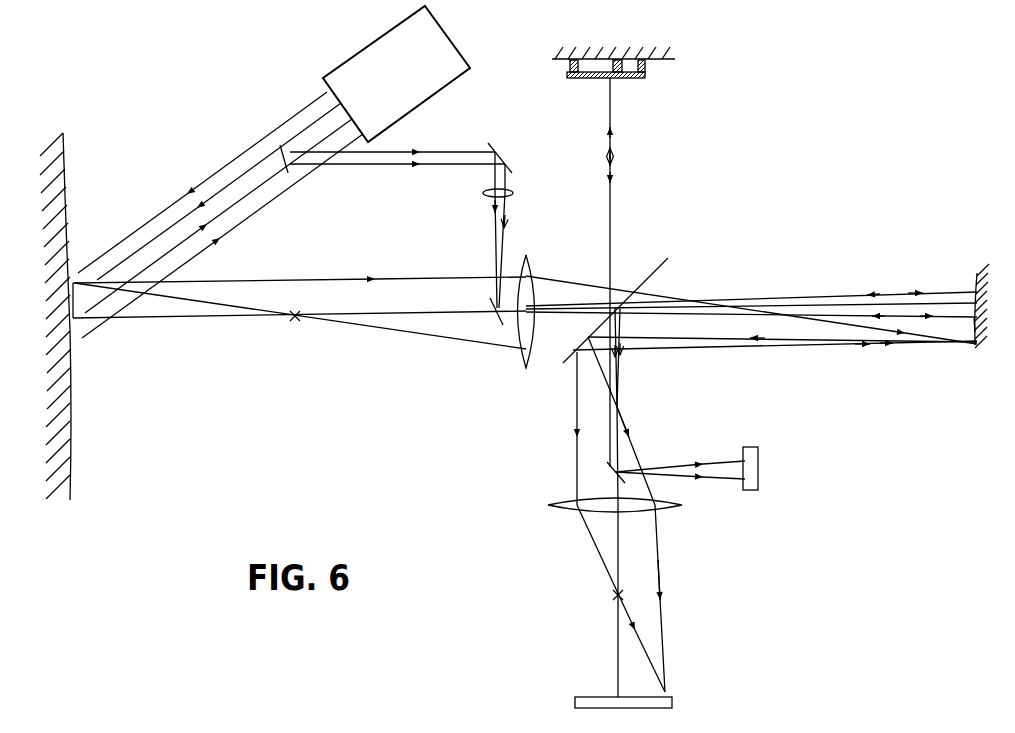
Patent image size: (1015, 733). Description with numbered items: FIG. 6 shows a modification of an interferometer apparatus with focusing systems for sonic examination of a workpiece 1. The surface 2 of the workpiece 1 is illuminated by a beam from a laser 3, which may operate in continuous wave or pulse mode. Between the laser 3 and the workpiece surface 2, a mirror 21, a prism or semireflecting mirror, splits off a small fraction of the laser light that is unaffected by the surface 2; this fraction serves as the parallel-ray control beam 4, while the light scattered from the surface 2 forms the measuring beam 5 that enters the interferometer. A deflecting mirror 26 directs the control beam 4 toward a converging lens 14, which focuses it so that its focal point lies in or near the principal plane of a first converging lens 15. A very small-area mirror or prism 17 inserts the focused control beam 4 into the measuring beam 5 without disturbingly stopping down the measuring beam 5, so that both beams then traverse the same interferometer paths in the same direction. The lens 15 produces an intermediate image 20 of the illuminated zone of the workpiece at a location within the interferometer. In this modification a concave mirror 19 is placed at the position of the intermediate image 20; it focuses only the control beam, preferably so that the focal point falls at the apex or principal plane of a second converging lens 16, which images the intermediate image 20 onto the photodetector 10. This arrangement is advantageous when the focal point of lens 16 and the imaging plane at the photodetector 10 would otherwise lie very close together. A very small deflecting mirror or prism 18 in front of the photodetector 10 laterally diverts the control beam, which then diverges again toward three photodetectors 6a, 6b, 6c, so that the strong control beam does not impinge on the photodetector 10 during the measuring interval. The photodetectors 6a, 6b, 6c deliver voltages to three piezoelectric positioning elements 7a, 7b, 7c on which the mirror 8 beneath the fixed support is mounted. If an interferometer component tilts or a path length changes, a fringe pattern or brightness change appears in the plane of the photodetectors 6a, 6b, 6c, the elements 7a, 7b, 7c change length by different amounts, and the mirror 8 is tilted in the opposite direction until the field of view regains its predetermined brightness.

The workpiece 1 is at (60, 142).
The surface of the workpiece 2 is at (68, 157).
The laser 3 is at (438, 48).
The control beam 4 is at (445, 156).
The measuring beam 5 is at (294, 283).
The photodetector 6a is at (811, 468).
The photodetector 6b is at (811, 468).
The photodetector 6c is at (760, 468).
The piezoelectric positioning element 7a is at (665, 76).
The piezoelectric positioning element 7b is at (665, 76).
The piezoelectric positioning element 7c is at (645, 67).
The mirror 8 is at (656, 88).
The photodetector 10 is at (597, 702).
The converging lens 14 is at (513, 193).
The first converging lens 15 is at (530, 272).
The second converging lens 16 is at (576, 508).
The small-area mirror or prism 17 is at (494, 316).
The deflecting mirror or prism 18 is at (604, 467).
The concave mirror 19 is at (975, 285).
The intermediate image 20 is at (968, 325).
The mirror 21 is at (276, 158).
The deflecting mirror 26 is at (509, 152).